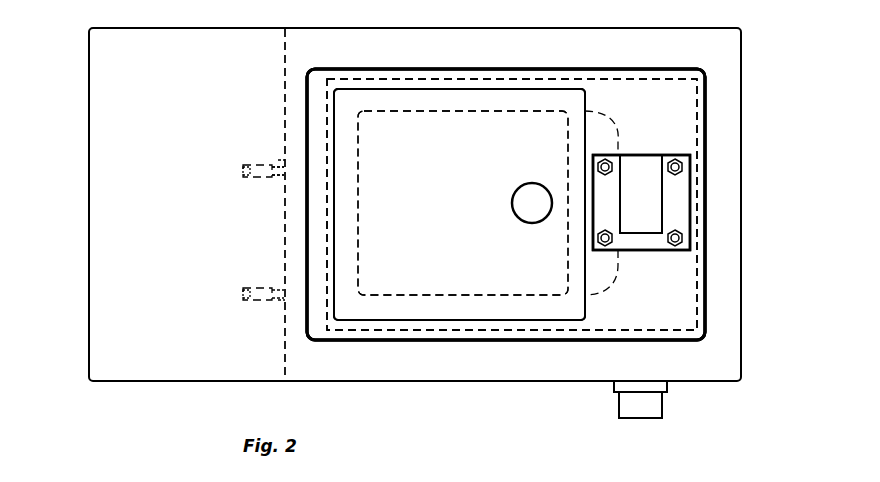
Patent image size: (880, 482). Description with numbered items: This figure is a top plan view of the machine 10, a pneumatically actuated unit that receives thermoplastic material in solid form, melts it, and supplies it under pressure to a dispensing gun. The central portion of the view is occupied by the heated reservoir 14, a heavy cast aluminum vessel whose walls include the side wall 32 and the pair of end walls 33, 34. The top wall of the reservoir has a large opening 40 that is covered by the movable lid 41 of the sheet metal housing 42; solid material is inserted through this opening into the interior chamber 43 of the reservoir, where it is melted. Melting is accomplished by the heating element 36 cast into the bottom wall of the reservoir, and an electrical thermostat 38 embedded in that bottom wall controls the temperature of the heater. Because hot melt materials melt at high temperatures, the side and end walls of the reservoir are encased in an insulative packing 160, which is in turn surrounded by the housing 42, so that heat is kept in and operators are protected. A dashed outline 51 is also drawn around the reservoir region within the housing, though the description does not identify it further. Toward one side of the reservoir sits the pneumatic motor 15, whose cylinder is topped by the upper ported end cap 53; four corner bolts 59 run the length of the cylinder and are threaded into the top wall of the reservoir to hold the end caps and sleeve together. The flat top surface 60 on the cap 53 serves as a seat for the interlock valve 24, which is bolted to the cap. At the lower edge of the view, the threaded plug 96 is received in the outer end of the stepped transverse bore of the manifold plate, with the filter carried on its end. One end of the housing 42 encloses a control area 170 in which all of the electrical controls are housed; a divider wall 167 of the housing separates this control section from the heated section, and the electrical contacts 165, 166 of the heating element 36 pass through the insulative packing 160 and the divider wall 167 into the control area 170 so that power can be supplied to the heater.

The machine 10 is at (800, 111).
The heated reservoir 14 is at (624, 92).
The pneumatic motor 15 is at (690, 203).
The interlock valve 24 is at (636, 182).
The side wall 32 is at (480, 325).
The end wall 33 is at (700, 163).
The end wall 34 is at (325, 228).
The heating element 36 is at (278, 158).
The electrical thermostat 38 is at (282, 118).
The opening 40 is at (370, 171).
The movable lid 41 is at (422, 89).
The housing 42 is at (506, 190).
The interior chamber 43 is at (430, 247).
The gasket 51 is at (500, 79).
The upper ported end cap 53 is at (680, 215).
The corner bolts 59 is at (606, 242).
The flat top surface 60 is at (604, 191).
The threaded plug 96 is at (650, 396).
The insulative packing 160 is at (302, 50).
The electrical contact 165 is at (243, 293).
The electrical contact 166 is at (243, 171).
The divider wall 167 is at (283, 185).
The control area 170 is at (118, 204).